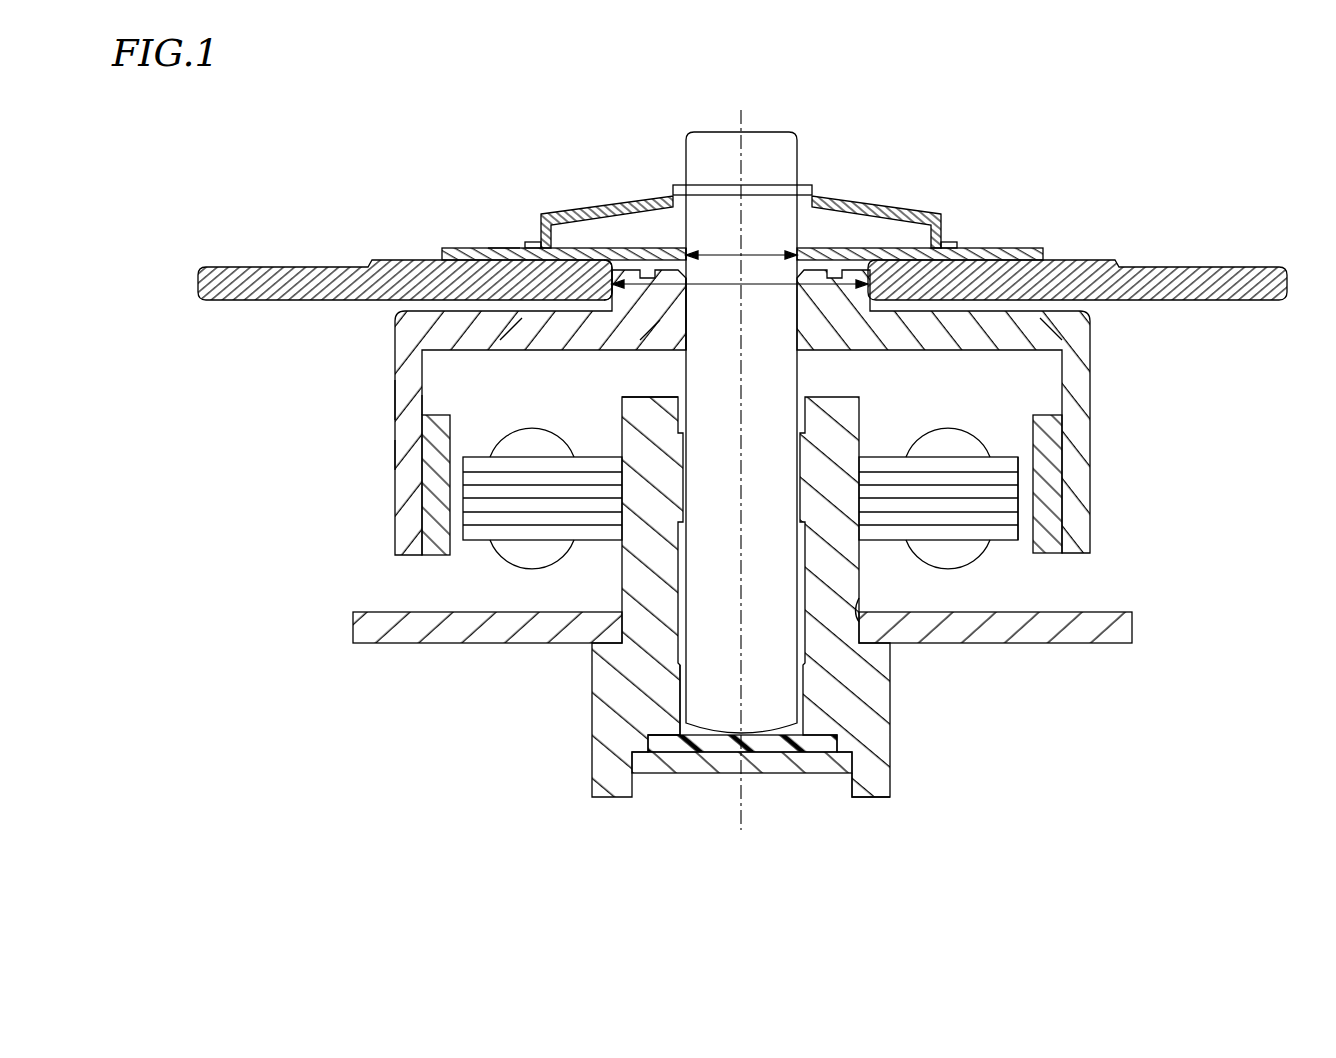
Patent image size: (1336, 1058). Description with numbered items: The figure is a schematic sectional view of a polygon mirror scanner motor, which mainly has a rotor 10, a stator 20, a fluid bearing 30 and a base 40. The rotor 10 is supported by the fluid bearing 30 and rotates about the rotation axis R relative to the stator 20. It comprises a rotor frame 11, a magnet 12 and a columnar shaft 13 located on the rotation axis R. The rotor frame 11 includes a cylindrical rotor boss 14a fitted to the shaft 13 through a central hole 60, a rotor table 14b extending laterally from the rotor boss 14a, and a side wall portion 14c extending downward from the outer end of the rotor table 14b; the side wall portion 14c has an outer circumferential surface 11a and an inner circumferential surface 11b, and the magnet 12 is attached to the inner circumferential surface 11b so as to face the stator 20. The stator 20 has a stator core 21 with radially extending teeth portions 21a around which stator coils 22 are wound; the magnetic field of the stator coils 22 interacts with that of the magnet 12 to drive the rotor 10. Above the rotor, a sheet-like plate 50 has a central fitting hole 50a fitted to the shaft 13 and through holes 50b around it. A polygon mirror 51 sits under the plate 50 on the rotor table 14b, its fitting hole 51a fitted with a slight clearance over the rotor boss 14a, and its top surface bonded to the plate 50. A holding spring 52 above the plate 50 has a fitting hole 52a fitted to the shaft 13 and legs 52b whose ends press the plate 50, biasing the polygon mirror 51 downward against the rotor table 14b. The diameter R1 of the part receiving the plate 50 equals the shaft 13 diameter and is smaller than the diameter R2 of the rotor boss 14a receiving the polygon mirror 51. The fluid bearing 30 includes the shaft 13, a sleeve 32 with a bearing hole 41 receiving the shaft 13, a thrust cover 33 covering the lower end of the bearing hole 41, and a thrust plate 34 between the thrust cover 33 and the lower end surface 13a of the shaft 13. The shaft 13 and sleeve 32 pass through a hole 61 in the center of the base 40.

The rotor 10 is at (761, 412).
The rotor frame 11 is at (740, 412).
The outer circumferential surface 11a is at (395, 400).
The inner circumferential surface 11b is at (425, 410).
The magnet 12 is at (792, 485).
The shaft 13 is at (1090, 328).
The lower end surface 13a is at (697, 732).
The rotor boss 14a is at (630, 312).
The rotor table 14b is at (514, 330).
The side wall portion 14c is at (395, 455).
The stator 20 is at (760, 477).
The stator core 21 is at (760, 494).
The teeth portions 21a is at (957, 505).
The stator coils 22 is at (990, 407).
The fluid bearing 30 is at (699, 588).
The sleeve 32 is at (870, 780).
The thrust cover 33 is at (720, 765).
The thrust plate 34 is at (690, 757).
The base 40 is at (769, 614).
The bearing hole 41 is at (775, 645).
The plate 50 is at (742, 217).
The fitting hole 50a is at (684, 246).
The through holes 50b is at (500, 247).
The polygon mirror 51 is at (742, 237).
The fitting hole 51a is at (620, 262).
The holding spring 52 is at (741, 167).
The fitting hole 52a is at (700, 190).
The legs 52b is at (605, 212).
The hole 60 is at (690, 312).
The hole 61 is at (862, 612).
The rotation axis R is at (745, 818).
The diameter R1 is at (705, 250).
The diameter R2 is at (803, 283).